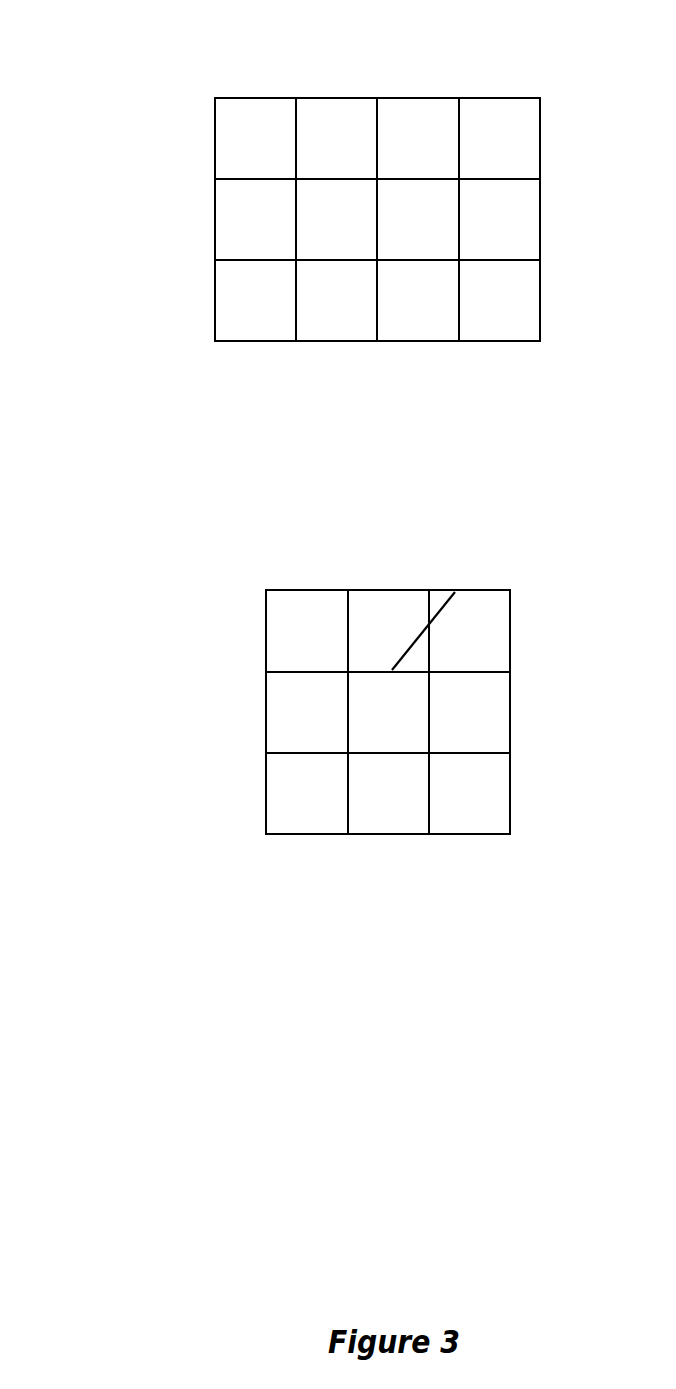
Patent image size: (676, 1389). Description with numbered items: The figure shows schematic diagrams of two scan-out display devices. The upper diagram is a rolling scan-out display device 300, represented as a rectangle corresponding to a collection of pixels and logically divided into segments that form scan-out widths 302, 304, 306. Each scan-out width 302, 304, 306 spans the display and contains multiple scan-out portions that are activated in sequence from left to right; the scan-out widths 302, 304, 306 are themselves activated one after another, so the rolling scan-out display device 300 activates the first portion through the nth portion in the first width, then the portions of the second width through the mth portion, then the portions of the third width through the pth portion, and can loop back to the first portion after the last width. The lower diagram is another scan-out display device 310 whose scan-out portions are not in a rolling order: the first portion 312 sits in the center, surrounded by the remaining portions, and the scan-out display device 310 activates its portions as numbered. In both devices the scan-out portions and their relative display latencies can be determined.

The rolling scan-out display device 300 is at (160, 37).
The scan-out width 302 is at (215, 138).
The scan-out width 304 is at (215, 226).
The scan-out width 306 is at (215, 315).
The scan-out display device 310 is at (233, 563).
The portion 1 312 is at (455, 592).